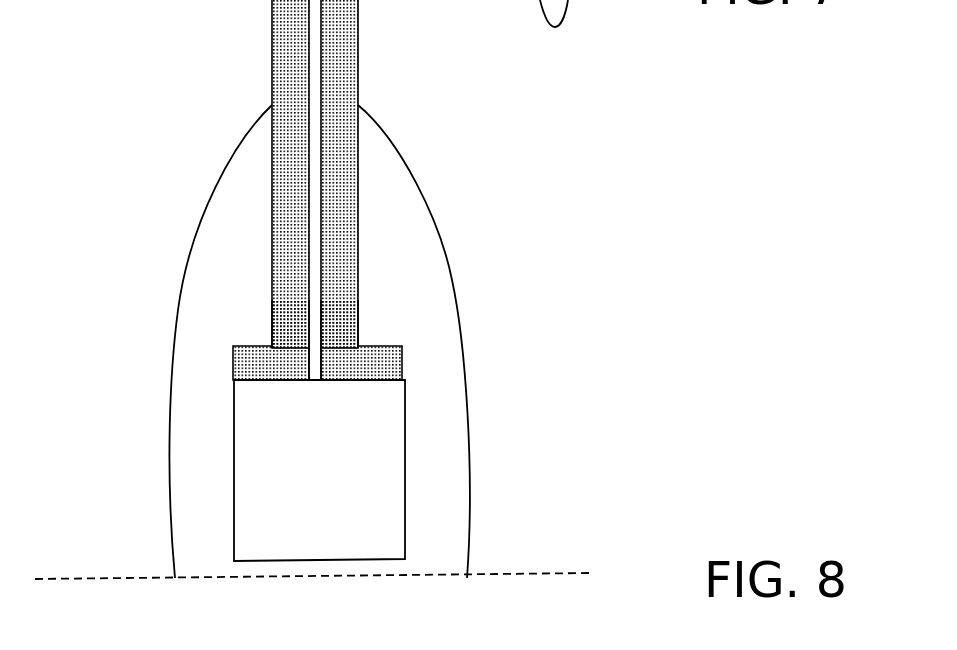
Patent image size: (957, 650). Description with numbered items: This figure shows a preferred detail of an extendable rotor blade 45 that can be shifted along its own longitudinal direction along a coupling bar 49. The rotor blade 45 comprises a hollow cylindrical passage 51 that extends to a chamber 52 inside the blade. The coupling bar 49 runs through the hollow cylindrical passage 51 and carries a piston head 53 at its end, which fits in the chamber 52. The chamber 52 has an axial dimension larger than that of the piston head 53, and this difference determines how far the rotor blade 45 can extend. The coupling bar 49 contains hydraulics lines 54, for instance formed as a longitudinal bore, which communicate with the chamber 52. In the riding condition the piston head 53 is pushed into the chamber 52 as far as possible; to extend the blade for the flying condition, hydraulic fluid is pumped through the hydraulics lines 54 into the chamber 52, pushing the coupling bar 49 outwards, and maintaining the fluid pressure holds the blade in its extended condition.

The rotor blade 45 is at (450, 272).
The coupling bar 49 is at (358, 51).
The hollow cylindrical passage 51 is at (272, 206).
The chamber 52 is at (349, 494).
The piston head 53 is at (248, 360).
The hydraulics lines 54 is at (315, 52).